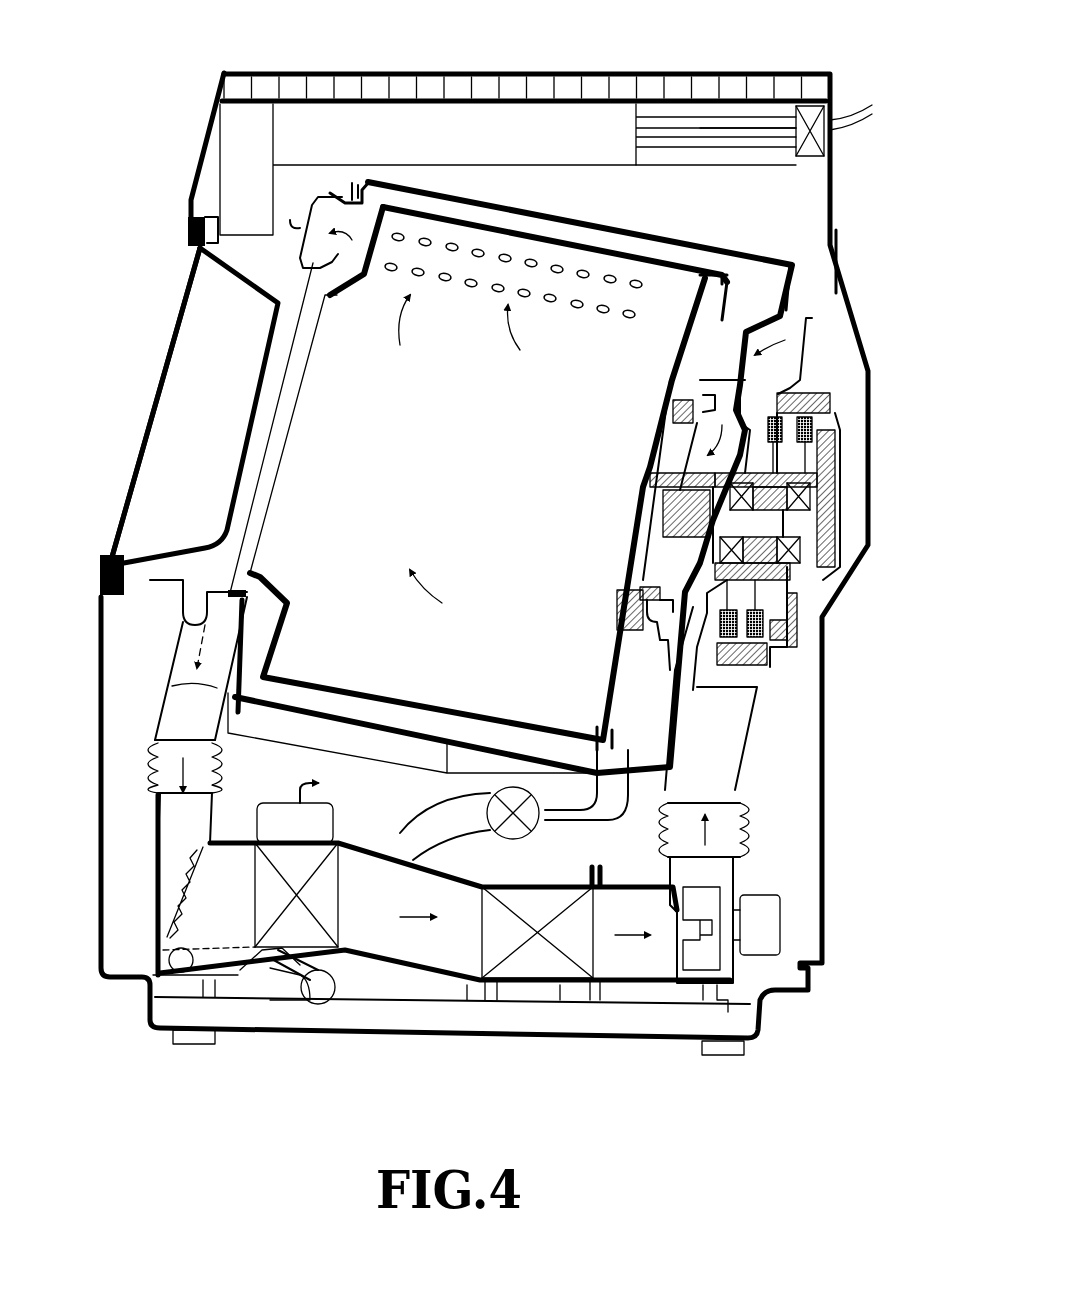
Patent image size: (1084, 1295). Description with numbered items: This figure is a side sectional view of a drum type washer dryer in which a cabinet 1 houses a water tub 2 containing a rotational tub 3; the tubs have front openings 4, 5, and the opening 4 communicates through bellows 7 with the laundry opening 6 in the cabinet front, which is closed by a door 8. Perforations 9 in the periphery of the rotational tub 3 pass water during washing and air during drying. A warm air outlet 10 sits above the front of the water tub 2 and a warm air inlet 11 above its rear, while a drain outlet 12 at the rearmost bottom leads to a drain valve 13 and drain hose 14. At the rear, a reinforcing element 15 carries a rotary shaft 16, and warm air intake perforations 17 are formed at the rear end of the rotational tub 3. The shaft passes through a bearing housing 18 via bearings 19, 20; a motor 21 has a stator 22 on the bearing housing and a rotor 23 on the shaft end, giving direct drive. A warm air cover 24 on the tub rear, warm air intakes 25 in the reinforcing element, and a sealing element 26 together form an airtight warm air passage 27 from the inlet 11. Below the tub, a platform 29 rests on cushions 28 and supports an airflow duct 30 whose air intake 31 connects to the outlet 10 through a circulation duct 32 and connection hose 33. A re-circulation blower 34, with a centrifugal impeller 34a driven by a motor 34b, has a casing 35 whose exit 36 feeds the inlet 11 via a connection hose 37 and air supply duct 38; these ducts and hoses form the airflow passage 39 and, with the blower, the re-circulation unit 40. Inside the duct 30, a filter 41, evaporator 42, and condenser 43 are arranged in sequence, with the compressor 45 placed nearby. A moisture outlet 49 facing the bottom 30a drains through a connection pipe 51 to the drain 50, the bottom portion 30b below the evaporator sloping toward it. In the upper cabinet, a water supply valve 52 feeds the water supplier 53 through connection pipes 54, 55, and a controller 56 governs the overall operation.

The cabinet 1 is at (838, 163).
The water tub 2 is at (673, 240).
The rotational tub 3 is at (540, 237).
The opening 4 is at (288, 411).
The opening 5 is at (290, 483).
The opening 6 is at (195, 255).
The bellows 7 is at (292, 235).
The door 8 is at (155, 388).
The perforations 9 is at (470, 285).
The warm air outlet 10 is at (340, 205).
The warm air inlet 11 is at (835, 330).
The drain outlet 12 is at (613, 770).
The drain valve 13 is at (522, 836).
The drain hose 14 is at (430, 815).
The reinforcing element 15 is at (708, 317).
The rotary shaft 16 is at (836, 549).
The warm air intake perforations 17 is at (660, 445).
The bearing housing 18 is at (832, 492).
The bearing 19 is at (810, 612).
The bearing 20 is at (820, 582).
The motor 21 is at (848, 426).
The stator 22 is at (832, 400).
The rotor 23 is at (840, 375).
The warm air cover 24 is at (792, 288).
The warm air intakes 25 is at (648, 470).
The sealing element 26 is at (677, 412).
The warm air passage 27 is at (717, 392).
The cushions 28 is at (150, 1022).
The platform 29 is at (480, 962).
The airflow duct 30 is at (517, 980).
The bottom 30a is at (150, 963).
The portion 30b is at (253, 983).
The air intake 31 is at (180, 833).
The circulation duct 32 is at (172, 690).
The connection hose 33 is at (150, 762).
The re-circulation blower 34 is at (630, 993).
The centrifugal impeller 34a is at (743, 998).
The motor 34b is at (783, 935).
The casing 35 is at (678, 993).
The exit 36 is at (725, 880).
The connection hose 37 is at (762, 825).
The air supply duct 38 is at (700, 690).
The airflow passage 39 is at (570, 978).
The re-circulation unit 40 is at (413, 967).
The filter 41 is at (177, 888).
The evaporator 42 is at (257, 918).
The condenser 43 is at (547, 972).
The compressor 45 is at (272, 803).
The moisture outlet 49 is at (178, 956).
The drain 50 is at (320, 1000).
The connection pipe 51 is at (280, 982).
The water supply valve 52 is at (808, 128).
The water supplier 53 is at (455, 118).
The connection pipe 54 is at (685, 117).
The connection pipe 55 is at (750, 137).
The controller 56 is at (274, 140).